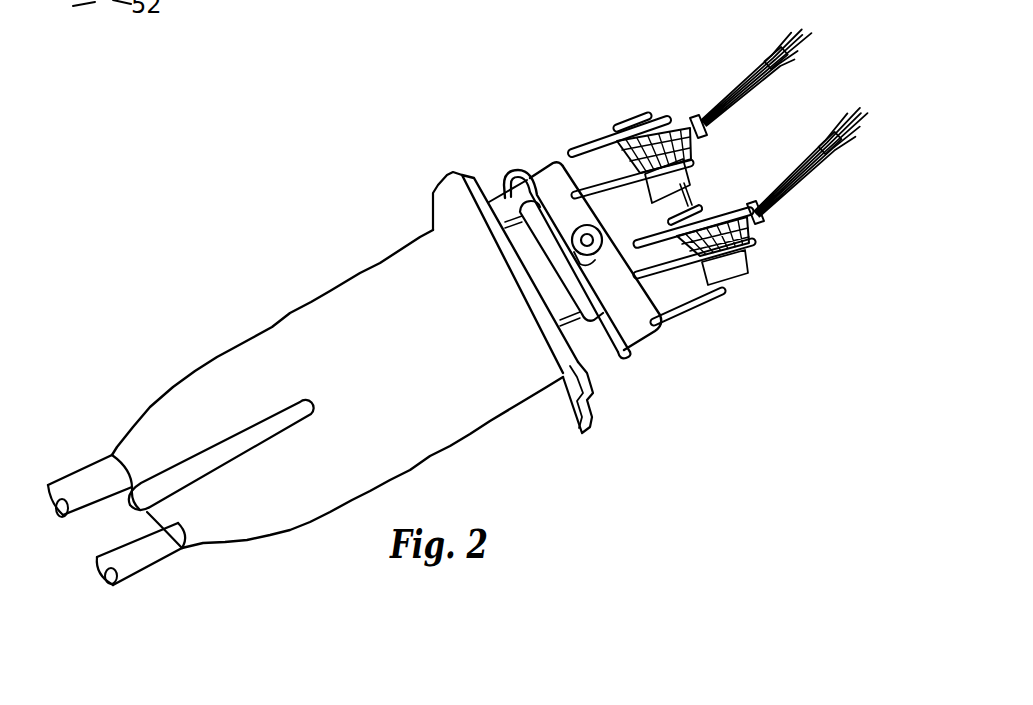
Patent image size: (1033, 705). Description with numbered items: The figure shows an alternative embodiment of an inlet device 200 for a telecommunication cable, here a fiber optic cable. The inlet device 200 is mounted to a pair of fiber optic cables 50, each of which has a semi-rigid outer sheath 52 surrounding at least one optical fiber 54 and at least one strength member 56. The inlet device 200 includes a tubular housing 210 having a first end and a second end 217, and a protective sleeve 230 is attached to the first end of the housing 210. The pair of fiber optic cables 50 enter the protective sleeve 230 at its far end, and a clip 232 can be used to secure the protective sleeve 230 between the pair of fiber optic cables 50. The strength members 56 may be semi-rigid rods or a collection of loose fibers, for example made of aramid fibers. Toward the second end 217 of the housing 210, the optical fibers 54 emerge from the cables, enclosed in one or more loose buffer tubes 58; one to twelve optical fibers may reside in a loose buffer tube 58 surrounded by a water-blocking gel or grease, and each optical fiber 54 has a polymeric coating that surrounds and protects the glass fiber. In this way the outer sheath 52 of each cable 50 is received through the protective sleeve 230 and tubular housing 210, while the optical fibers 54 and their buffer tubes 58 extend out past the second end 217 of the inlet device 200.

The inlet device 200 is at (336, 178).
The protective sleeve 230 is at (380, 283).
The clip 232 is at (270, 421).
The fiber optic cables 50 is at (120, 530).
The outer sheath 52 is at (146, 553).
The tubular housing 210 is at (505, 200).
The strength member 56 is at (598, 178).
The second end 217 is at (603, 147).
The loose buffer tube 58 is at (675, 137).
The optical fiber 54 is at (746, 78).